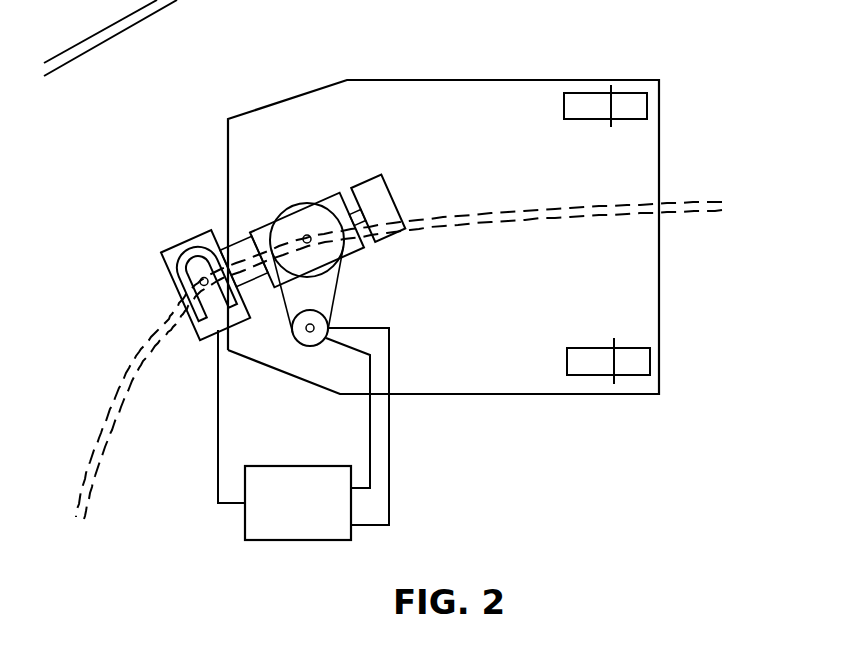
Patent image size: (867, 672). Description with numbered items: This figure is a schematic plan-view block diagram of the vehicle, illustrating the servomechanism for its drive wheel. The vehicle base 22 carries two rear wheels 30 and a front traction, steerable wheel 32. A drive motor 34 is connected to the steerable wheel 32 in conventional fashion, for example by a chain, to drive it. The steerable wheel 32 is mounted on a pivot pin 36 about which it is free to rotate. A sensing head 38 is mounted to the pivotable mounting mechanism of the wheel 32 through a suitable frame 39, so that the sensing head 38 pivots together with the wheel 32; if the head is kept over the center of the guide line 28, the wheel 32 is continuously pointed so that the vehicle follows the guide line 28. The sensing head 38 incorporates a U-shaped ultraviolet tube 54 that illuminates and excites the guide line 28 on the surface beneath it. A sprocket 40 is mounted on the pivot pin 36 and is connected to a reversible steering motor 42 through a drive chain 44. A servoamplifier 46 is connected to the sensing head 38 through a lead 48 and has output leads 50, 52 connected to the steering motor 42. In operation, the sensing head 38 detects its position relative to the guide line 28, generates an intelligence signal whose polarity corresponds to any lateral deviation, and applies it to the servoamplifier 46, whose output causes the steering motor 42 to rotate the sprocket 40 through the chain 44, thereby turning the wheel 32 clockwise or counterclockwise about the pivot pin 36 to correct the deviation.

The vehicle base 22 is at (575, 76).
The guide line 28 is at (130, 362).
The rear wheels 30 is at (635, 100).
The steerable wheel 32 is at (327, 193).
The drive motor 34 is at (378, 188).
The pivot pin 36 is at (312, 242).
The sensing head 38 is at (190, 225).
The frame 39 is at (253, 290).
The sprocket 40 is at (293, 212).
The reversible steering motor 42 is at (310, 337).
The drive chain 44 is at (330, 292).
The servoamplifier 46 is at (275, 466).
The lead 48 is at (218, 432).
The output lead 50 is at (370, 431).
The output lead 52 is at (392, 463).
The U-shaped ultraviolet tube 54 is at (178, 280).